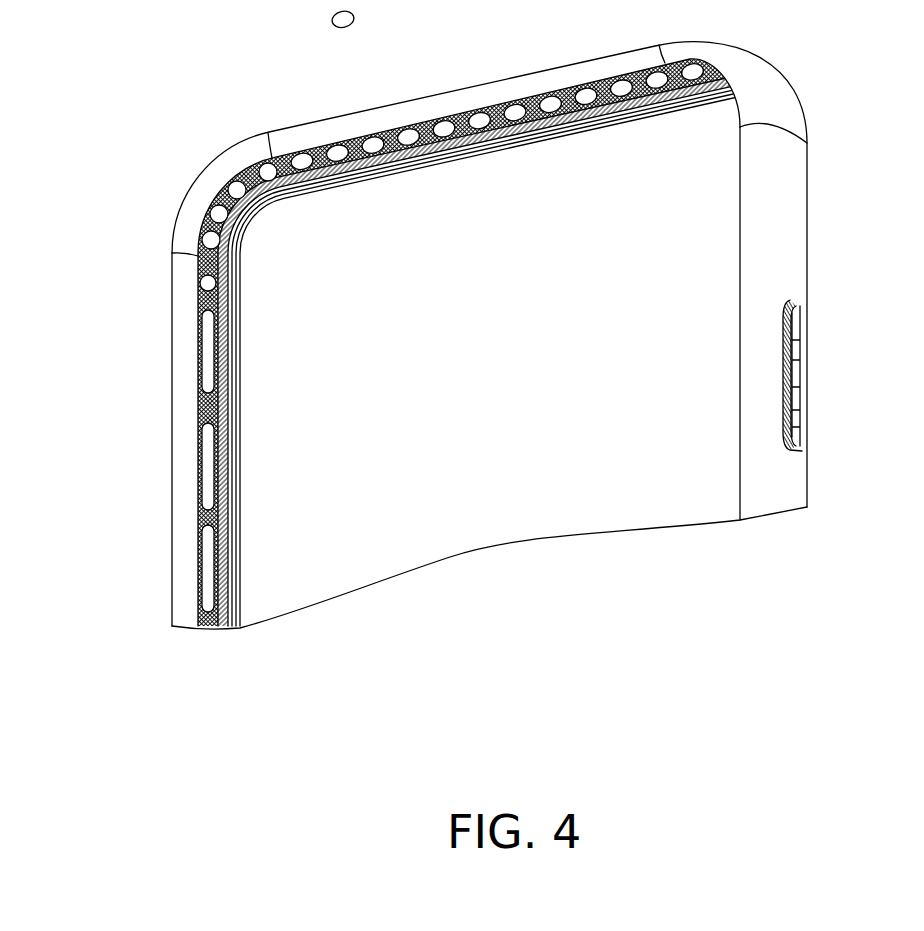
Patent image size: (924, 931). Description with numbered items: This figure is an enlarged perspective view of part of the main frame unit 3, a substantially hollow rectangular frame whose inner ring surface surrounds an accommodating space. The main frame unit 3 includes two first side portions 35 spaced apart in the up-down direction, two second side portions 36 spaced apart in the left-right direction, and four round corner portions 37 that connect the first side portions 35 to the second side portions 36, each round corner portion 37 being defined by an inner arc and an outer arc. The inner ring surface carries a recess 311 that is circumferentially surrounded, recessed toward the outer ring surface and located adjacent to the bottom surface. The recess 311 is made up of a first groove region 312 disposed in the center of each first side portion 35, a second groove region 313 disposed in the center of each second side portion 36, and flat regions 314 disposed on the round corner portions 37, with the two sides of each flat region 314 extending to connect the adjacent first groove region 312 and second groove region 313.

The main frame unit 3 is at (818, 264).
The first side portion 35 is at (433, 96).
The second side portion 36 is at (170, 477).
The round corner portion 37 is at (243, 156).
The recess 311 is at (230, 187).
The first groove region 312 is at (533, 135).
The second groove region 313 is at (232, 569).
The flat region 314 is at (303, 187).